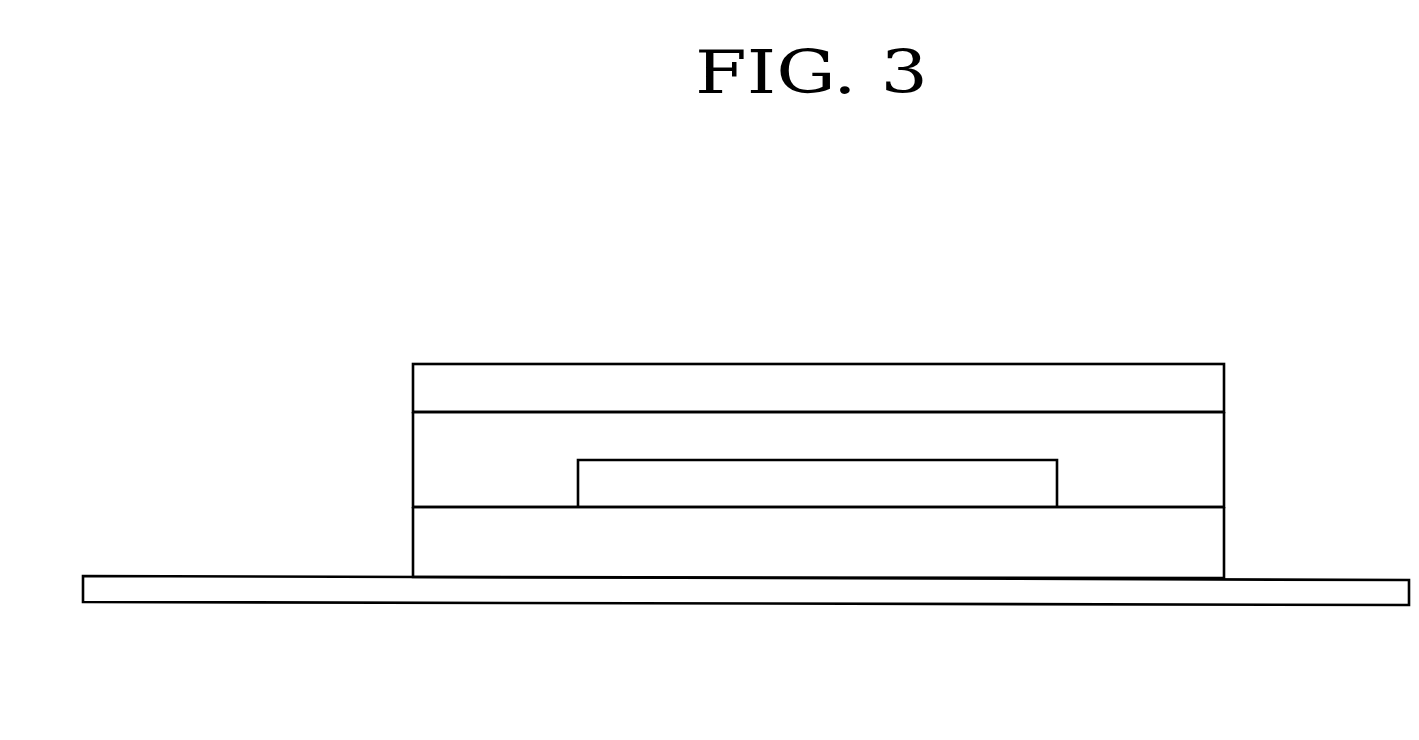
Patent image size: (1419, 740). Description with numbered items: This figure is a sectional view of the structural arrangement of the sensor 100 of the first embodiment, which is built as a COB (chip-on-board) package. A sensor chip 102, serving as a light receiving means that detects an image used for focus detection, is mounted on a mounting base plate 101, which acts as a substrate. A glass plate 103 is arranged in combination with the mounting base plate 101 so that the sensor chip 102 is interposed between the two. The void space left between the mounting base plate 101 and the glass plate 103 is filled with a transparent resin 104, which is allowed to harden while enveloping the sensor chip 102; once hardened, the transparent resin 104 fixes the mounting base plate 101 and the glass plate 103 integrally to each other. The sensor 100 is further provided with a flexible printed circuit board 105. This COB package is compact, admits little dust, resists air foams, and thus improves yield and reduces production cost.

The sensor 100 is at (718, 315).
The mounting base plate 101 is at (503, 562).
The sensor chip 102 is at (748, 490).
The glass plate 103 is at (965, 384).
The transparent resin 104 is at (830, 428).
The flexible printed circuit board 105 is at (323, 590).